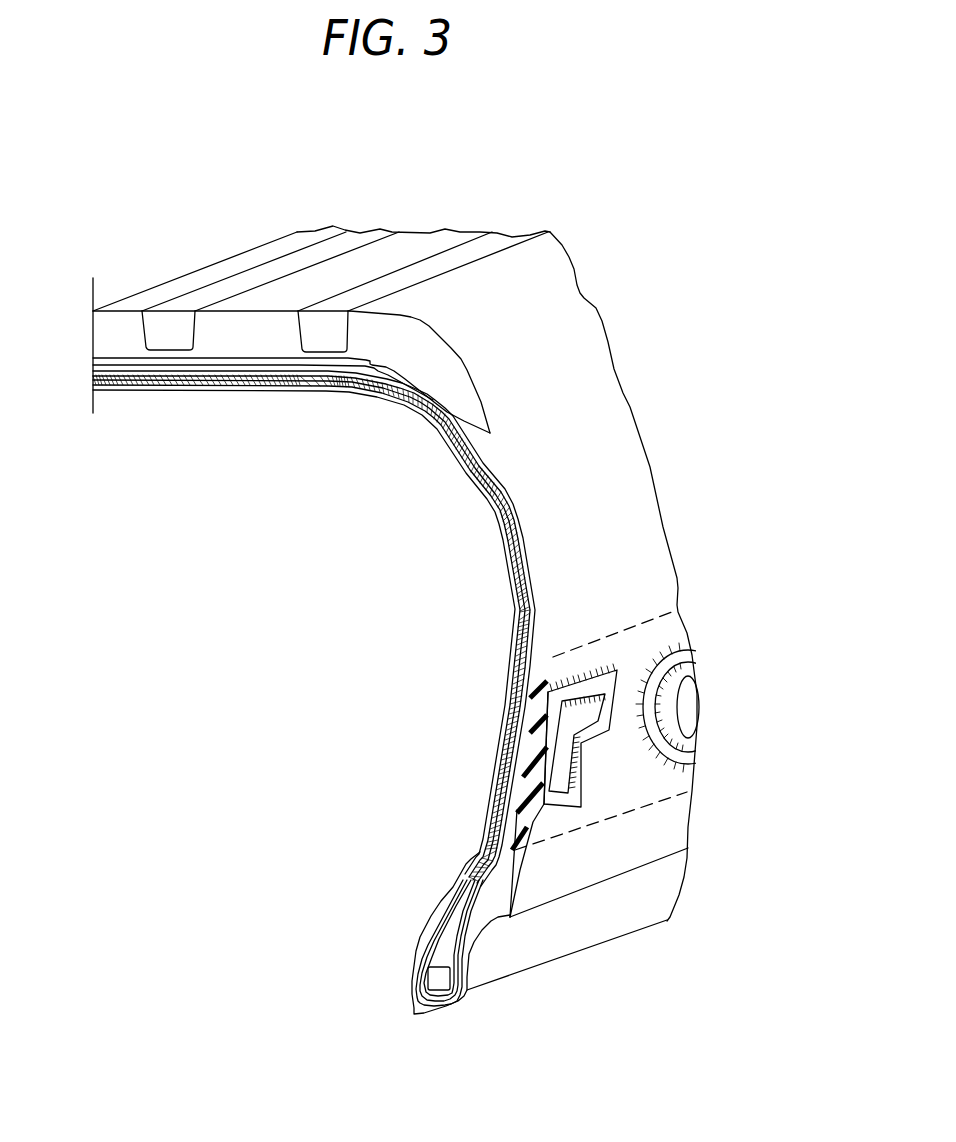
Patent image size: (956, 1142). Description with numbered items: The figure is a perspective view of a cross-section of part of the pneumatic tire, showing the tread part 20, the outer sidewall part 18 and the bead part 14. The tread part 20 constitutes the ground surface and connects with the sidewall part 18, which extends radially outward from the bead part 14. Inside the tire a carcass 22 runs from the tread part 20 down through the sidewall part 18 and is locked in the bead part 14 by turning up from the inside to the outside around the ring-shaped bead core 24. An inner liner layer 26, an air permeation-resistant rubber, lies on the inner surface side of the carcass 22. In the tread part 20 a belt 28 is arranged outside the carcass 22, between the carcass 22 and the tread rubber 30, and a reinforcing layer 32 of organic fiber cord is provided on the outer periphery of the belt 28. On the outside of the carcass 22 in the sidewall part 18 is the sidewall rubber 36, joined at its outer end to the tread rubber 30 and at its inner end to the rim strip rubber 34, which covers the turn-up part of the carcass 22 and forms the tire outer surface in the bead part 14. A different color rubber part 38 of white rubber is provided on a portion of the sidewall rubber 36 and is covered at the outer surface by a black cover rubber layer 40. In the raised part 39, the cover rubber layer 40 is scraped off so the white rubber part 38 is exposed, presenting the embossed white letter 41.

The bead part 14 is at (497, 1002).
The sidewall part 18 is at (706, 544).
The tread part 20 is at (237, 236).
The carcass 22 is at (492, 480).
The bead core 24 is at (433, 985).
The inner liner layer 26 is at (512, 578).
The belt 28 is at (334, 372).
The tread rubber 30 is at (380, 330).
The reinforcing layer 32 is at (380, 363).
The rim strip rubber 34 is at (490, 915).
The sidewall rubber 36 is at (513, 512).
The different color rubber part 38 is at (536, 741).
The raised part 39 is at (570, 810).
The cover rubber layer 40 is at (627, 793).
The white letter 41 is at (605, 709).